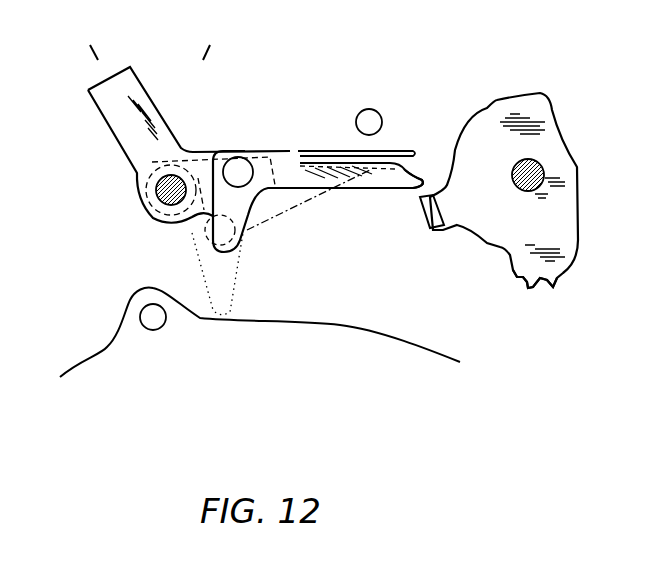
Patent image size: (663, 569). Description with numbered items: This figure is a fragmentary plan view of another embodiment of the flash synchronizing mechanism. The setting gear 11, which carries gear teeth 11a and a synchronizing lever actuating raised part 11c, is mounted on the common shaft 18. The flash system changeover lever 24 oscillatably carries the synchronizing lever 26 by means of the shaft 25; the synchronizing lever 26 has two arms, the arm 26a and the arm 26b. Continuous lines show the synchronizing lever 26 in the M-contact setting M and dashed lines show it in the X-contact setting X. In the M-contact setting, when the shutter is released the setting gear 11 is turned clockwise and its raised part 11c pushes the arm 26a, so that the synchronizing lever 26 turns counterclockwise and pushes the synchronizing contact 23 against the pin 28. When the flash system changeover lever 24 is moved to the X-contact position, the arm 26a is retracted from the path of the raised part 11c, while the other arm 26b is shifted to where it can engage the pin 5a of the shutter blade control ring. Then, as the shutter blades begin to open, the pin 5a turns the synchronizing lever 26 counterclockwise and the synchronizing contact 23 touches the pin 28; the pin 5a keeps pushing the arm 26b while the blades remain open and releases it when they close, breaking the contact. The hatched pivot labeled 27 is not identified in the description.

The M-contact setting M is at (83, 37).
The X-contact setting X is at (211, 37).
The flash system changeover lever 24 is at (115, 120).
The lever pivot pin 27 is at (163, 196).
The shaft 25 is at (241, 168).
The synchronizing lever 26 is at (292, 168).
The arm 26a is at (413, 188).
The arm 26b is at (247, 235).
The synchronizing contact 23 is at (405, 150).
The pin 28 is at (370, 112).
The setting gear 11 is at (505, 103).
The common shaft 18 is at (545, 168).
The synchronizing lever actuating raised part 11c is at (432, 232).
The gear teeth 11a is at (545, 290).
The pin of the shutter blade control ring 5a is at (150, 315).